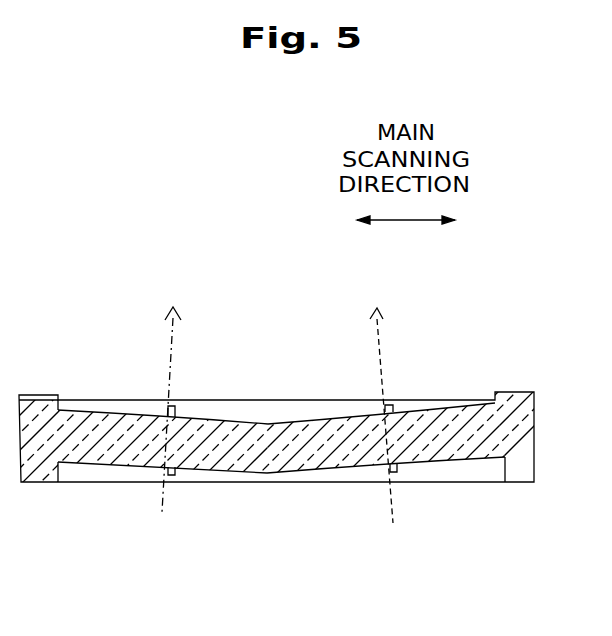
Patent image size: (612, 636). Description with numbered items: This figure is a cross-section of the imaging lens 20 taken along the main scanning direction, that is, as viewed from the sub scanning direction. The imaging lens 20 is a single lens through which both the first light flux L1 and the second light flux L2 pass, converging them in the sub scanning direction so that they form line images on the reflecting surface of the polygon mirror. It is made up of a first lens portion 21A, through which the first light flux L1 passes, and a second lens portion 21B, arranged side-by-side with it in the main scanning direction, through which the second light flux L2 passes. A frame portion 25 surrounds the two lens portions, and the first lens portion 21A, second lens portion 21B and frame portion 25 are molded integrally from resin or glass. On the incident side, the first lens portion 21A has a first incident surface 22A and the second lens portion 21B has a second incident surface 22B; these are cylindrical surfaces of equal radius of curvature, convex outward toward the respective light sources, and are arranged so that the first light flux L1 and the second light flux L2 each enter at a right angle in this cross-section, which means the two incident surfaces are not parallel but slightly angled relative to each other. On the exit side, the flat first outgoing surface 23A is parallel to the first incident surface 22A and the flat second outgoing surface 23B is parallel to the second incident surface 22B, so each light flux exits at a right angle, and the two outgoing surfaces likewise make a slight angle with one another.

The imaging lens 20 is at (502, 353).
The frame portion 25 is at (523, 427).
The first lens portion 21A is at (330, 425).
The second lens portion 21B is at (227, 425).
The first outgoing surface 23A is at (423, 408).
The second outgoing surface 23B is at (130, 413).
The first incident surface 22A is at (460, 482).
The second incident surface 22B is at (115, 482).
The first light flux L1 is at (392, 498).
The second light flux L2 is at (162, 510).